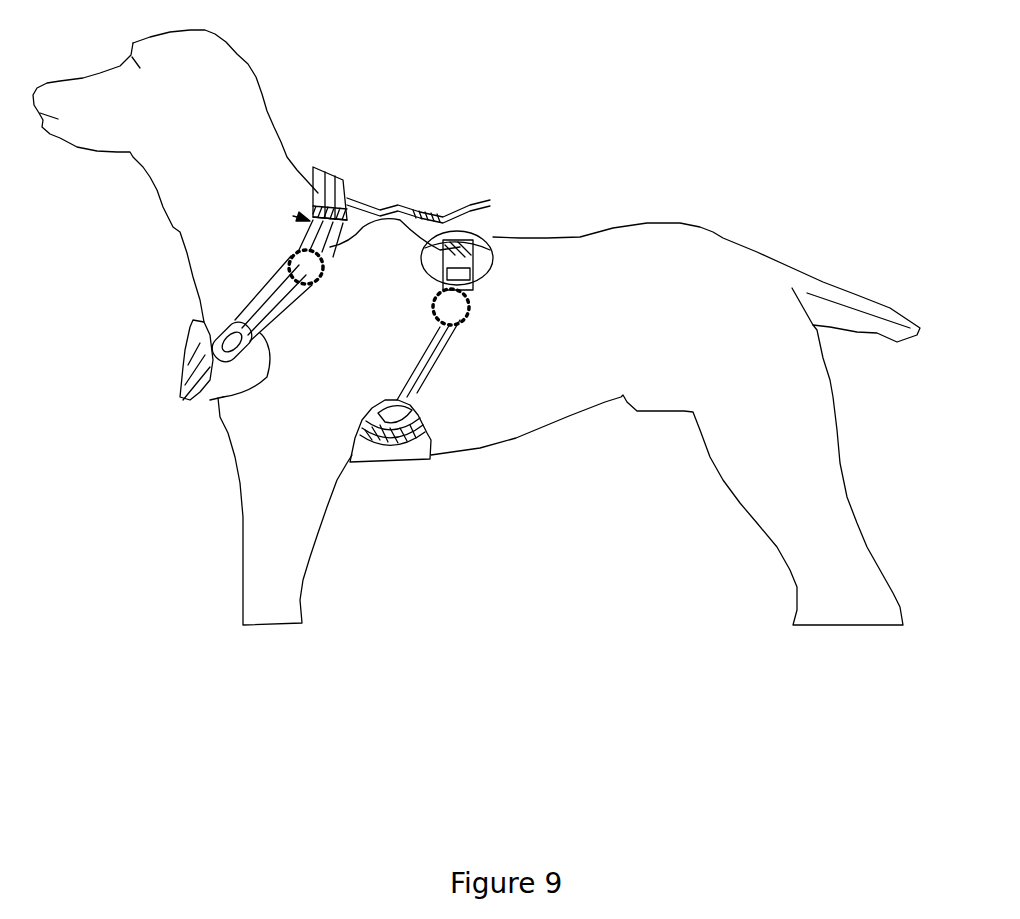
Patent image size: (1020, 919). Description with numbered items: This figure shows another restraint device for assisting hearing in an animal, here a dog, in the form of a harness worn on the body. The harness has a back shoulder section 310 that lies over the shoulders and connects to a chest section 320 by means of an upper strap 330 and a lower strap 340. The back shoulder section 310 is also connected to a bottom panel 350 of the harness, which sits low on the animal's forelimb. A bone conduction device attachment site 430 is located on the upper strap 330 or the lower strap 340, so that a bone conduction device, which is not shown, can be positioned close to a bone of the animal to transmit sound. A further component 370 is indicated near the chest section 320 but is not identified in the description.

The back shoulder section 310 is at (395, 190).
The chest section 320 is at (209, 406).
The upper strap 330 is at (327, 165).
The lower strap 340 is at (454, 340).
The bottom panel 350 is at (413, 460).
The chest attachment tab 370 is at (188, 351).
The bone conduction device attachment site 430 is at (437, 306).